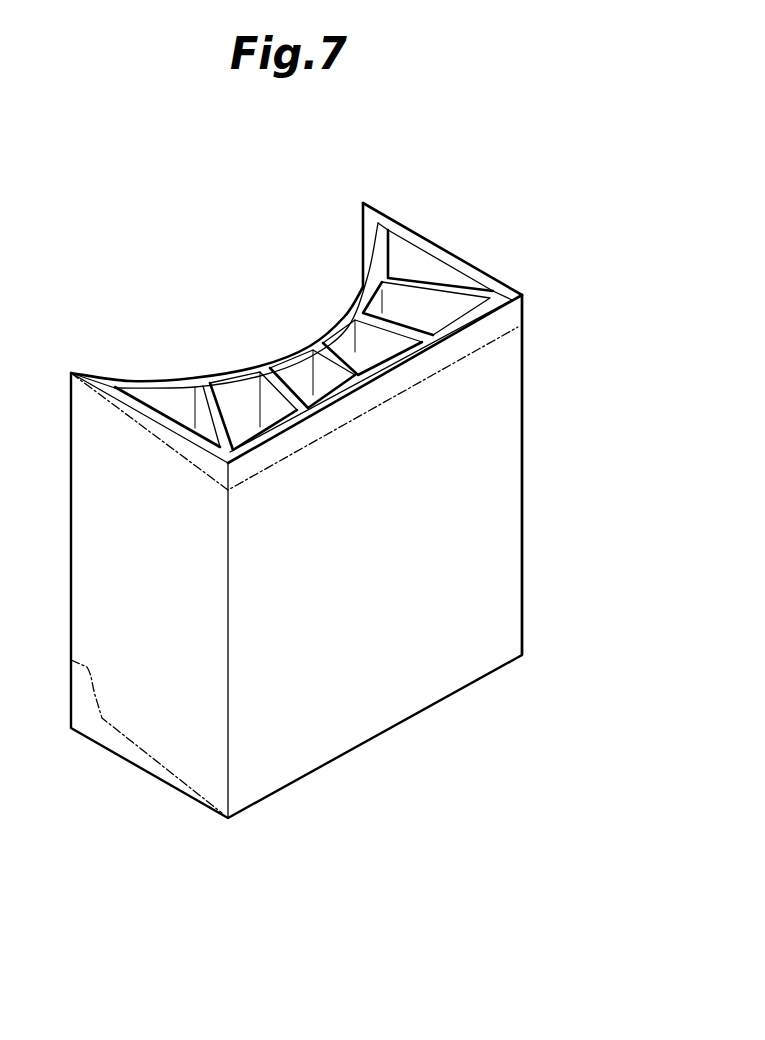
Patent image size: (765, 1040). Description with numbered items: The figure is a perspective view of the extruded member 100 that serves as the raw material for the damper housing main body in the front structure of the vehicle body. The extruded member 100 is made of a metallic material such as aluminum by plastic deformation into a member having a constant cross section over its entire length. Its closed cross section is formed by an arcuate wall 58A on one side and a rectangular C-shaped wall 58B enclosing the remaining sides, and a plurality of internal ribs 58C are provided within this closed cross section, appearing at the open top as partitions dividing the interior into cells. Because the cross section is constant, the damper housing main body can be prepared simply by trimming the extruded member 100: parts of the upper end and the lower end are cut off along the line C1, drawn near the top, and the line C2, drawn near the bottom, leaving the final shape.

The extruded member 100 is at (529, 316).
The arcuate wall 58A is at (300, 347).
The rectangular C-shaped wall 58B is at (502, 489).
The internal ribs 58C is at (415, 330).
The line C1 is at (475, 353).
The line C2 is at (152, 760).